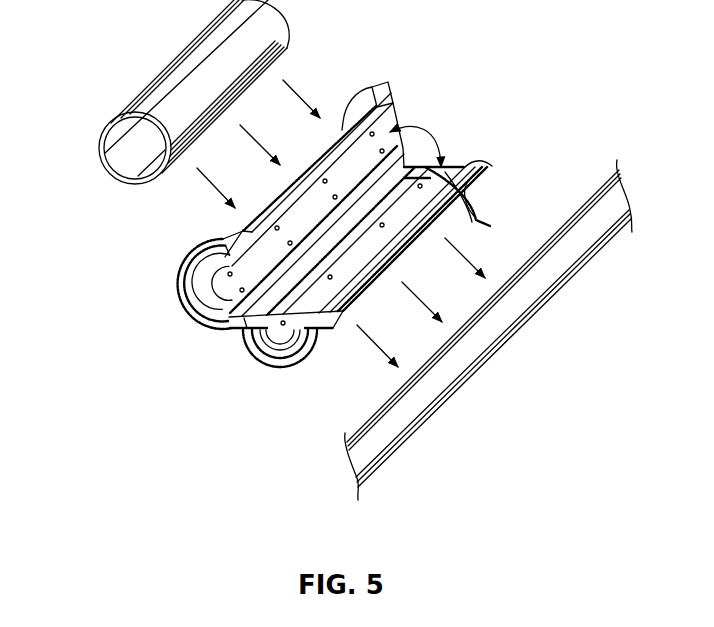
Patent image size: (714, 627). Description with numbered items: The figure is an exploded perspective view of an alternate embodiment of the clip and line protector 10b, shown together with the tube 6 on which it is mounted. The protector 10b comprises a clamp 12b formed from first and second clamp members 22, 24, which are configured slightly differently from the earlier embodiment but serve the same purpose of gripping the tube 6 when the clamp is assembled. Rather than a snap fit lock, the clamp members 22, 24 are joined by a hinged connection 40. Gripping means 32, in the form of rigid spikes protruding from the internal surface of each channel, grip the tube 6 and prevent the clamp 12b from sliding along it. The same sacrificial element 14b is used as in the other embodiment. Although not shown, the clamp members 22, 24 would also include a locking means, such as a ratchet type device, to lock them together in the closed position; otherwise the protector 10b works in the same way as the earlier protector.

The protector 10b is at (147, 52).
The sacrificial element 14b is at (124, 107).
The clamp 12b is at (324, 242).
The gripping means 32 is at (323, 180).
The hinged connection 40 is at (469, 224).
The first clamp member 22 is at (186, 300).
The second clamp member 24 is at (256, 364).
The tube 6 is at (527, 297).